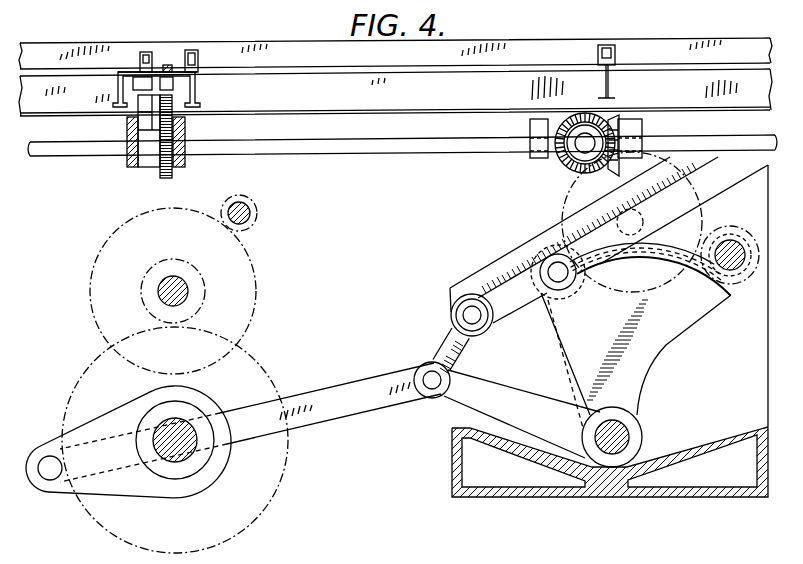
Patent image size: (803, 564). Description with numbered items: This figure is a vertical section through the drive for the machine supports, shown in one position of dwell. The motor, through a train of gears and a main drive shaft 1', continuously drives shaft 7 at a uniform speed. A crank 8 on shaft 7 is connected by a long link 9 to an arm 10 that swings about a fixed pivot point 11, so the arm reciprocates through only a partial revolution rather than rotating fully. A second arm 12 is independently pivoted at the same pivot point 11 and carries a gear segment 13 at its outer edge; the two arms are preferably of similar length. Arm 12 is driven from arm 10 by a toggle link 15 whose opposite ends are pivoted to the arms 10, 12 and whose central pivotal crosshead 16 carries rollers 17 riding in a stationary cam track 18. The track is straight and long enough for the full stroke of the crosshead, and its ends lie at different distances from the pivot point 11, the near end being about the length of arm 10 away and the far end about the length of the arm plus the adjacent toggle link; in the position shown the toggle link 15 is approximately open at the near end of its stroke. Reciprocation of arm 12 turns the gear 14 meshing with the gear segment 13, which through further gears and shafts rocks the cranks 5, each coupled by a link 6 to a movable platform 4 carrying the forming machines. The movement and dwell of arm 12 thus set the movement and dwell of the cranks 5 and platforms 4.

The main drive shaft 1' is at (252, 213).
The movable platform 4 is at (686, 41).
The crank 5 is at (155, 132).
The link 6 is at (152, 110).
The shaft 7 is at (188, 444).
The crank 8 is at (80, 410).
The long link 9 is at (327, 390).
The arm 10 is at (507, 384).
The fixed pivot point 11 is at (630, 436).
The second arm 12 is at (670, 347).
The gear segment 13 is at (675, 252).
The gear 14 is at (747, 282).
The toggle link 15 is at (475, 340).
The crosshead 16 is at (459, 309).
The roller 17 is at (477, 296).
The cam track 18 is at (511, 271).